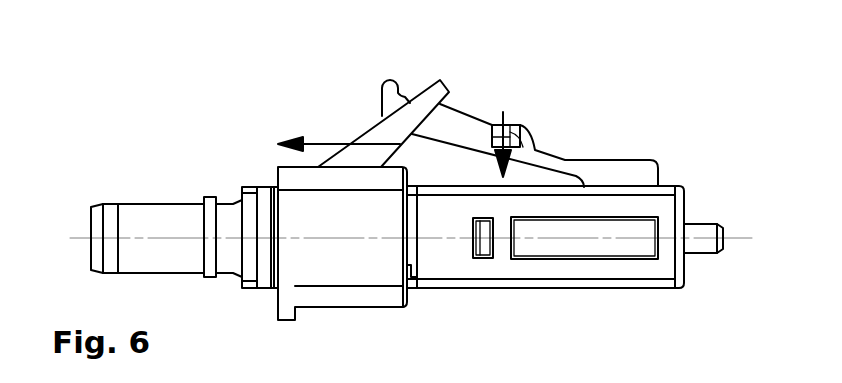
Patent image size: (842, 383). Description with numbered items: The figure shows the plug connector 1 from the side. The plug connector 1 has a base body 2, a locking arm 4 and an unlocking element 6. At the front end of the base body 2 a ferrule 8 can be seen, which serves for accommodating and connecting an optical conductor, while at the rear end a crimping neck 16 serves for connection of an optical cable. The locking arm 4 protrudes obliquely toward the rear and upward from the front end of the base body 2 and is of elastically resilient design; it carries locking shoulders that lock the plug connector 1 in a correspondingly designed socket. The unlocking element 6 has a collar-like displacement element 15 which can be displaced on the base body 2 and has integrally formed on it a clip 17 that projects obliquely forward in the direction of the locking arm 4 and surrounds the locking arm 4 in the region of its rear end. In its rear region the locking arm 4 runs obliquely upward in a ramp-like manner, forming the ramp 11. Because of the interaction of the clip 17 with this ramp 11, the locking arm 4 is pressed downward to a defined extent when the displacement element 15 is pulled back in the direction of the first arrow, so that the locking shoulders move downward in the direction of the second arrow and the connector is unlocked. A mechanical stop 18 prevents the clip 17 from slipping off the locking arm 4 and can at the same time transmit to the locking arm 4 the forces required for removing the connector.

The plug connector 1 is at (411, 201).
The base body 2 is at (462, 268).
The locking arm 4 is at (535, 105).
The unlocking element 6 is at (253, 126).
The ferrule 8 is at (699, 230).
The ramp 11 is at (460, 112).
The displacement element 15 is at (323, 260).
The crimping neck 16 is at (158, 215).
The clip 17 is at (352, 95).
The mechanical stop 18 is at (390, 90).